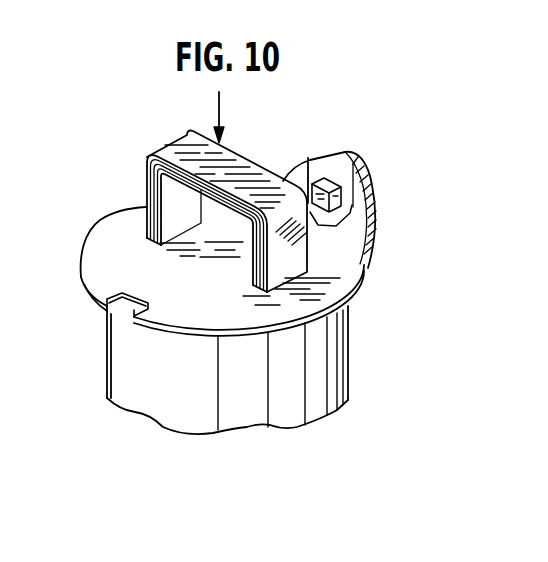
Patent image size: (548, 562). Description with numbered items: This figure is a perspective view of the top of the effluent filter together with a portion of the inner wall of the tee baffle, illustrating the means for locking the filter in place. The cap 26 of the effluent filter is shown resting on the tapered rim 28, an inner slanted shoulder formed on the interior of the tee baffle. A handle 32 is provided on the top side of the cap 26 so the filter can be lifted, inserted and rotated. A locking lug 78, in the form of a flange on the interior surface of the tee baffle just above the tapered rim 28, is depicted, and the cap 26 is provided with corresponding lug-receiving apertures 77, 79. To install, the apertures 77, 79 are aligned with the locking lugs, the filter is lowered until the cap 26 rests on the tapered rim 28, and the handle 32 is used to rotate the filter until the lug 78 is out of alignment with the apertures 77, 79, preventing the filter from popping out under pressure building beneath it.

The cap 26 is at (368, 276).
The tapered rim 28 is at (374, 242).
The handle 32 is at (233, 160).
The lug-receiving aperture 77 is at (127, 311).
The locking lug 78 is at (316, 187).
The lug-receiving aperture 79 is at (345, 230).